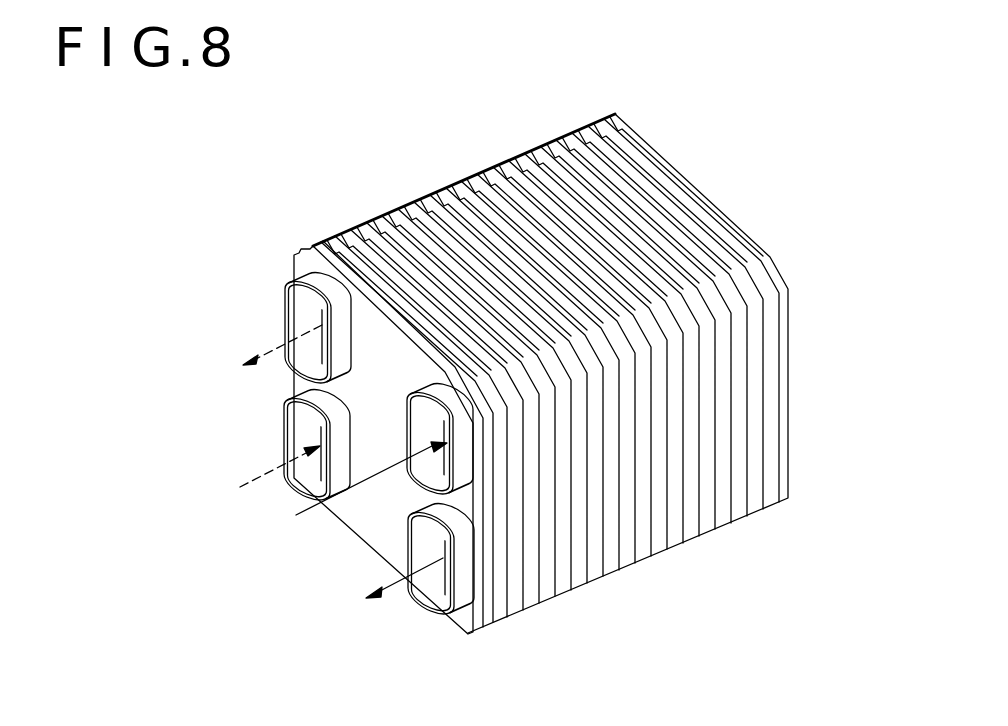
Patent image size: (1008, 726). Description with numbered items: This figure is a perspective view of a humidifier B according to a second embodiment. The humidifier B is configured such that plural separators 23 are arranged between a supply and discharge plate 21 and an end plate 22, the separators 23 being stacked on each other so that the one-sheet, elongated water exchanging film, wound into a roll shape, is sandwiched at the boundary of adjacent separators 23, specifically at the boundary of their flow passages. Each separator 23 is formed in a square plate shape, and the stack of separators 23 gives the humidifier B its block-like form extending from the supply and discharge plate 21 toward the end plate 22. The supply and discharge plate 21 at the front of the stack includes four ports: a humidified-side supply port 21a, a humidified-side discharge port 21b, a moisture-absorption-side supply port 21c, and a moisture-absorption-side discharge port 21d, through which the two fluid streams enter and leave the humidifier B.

The humidifier B is at (352, 197).
The supply and discharge plate 21 is at (362, 520).
The humidified-side supply port 21a is at (426, 430).
The humidified-side discharge port 21b is at (445, 588).
The moisture-absorption-side supply port 21c is at (303, 411).
The moisture-absorption-side discharge port 21d is at (303, 298).
The end plate 22 is at (793, 332).
The separators 23 is at (527, 152).